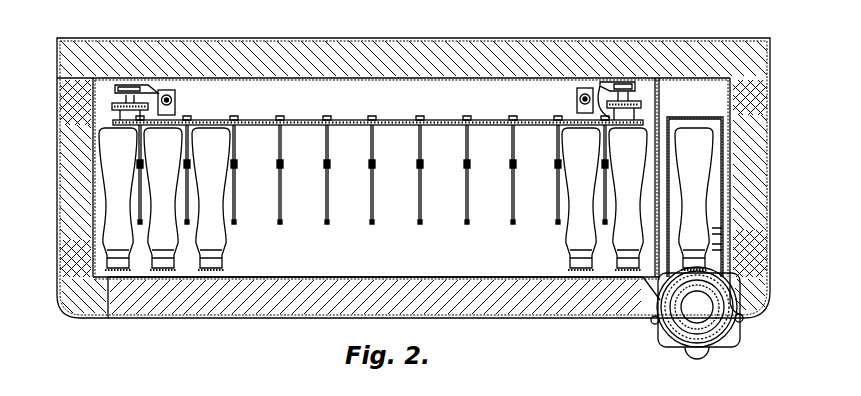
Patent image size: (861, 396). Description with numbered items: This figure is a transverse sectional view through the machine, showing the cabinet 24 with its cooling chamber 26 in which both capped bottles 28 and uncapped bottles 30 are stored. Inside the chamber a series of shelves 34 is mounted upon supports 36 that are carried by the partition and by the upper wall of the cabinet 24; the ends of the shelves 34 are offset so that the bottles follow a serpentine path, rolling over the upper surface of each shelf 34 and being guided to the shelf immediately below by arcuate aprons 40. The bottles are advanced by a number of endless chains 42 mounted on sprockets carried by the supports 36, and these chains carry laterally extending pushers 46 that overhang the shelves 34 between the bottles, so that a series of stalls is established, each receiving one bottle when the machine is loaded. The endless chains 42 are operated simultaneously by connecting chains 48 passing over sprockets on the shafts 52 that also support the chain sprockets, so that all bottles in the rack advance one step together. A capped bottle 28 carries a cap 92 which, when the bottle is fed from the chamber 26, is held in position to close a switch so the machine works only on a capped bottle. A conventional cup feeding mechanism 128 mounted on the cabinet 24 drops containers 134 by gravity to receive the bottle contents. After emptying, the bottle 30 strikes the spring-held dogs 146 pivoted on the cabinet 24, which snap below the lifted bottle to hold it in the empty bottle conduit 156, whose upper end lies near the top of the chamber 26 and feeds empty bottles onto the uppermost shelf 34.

The cabinet 24 is at (431, 178).
The cooling chamber 26 is at (448, 177).
The capped bottle 28 is at (213, 226).
The uncapped bottle 30 is at (695, 197).
The shelf 34 is at (310, 138).
The support 36 is at (176, 100).
The arcuate apron 40 is at (93, 229).
The endless chain 42 is at (395, 120).
The pusher 46 is at (777, 136).
The connecting chain 48 is at (116, 106).
The shaft 52 is at (152, 93).
The cap 92 is at (230, 272).
The cup feeding mechanism 128 is at (728, 332).
The container 134 is at (690, 313).
The dog 146 is at (716, 232).
The empty bottle conduit 156 is at (710, 246).